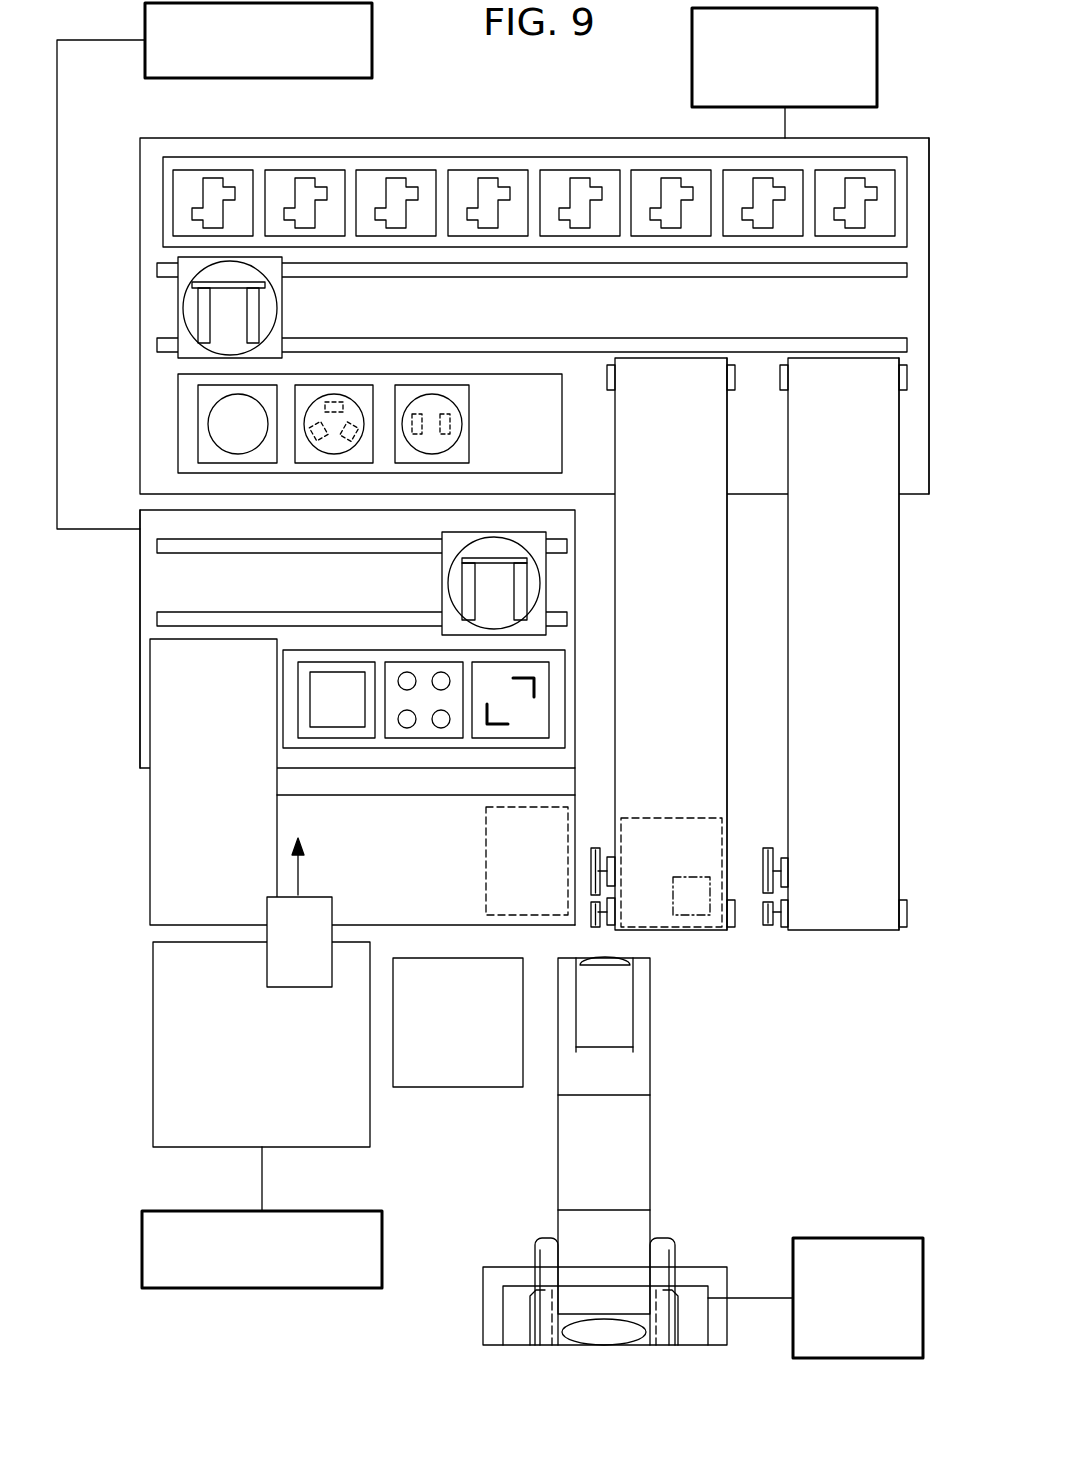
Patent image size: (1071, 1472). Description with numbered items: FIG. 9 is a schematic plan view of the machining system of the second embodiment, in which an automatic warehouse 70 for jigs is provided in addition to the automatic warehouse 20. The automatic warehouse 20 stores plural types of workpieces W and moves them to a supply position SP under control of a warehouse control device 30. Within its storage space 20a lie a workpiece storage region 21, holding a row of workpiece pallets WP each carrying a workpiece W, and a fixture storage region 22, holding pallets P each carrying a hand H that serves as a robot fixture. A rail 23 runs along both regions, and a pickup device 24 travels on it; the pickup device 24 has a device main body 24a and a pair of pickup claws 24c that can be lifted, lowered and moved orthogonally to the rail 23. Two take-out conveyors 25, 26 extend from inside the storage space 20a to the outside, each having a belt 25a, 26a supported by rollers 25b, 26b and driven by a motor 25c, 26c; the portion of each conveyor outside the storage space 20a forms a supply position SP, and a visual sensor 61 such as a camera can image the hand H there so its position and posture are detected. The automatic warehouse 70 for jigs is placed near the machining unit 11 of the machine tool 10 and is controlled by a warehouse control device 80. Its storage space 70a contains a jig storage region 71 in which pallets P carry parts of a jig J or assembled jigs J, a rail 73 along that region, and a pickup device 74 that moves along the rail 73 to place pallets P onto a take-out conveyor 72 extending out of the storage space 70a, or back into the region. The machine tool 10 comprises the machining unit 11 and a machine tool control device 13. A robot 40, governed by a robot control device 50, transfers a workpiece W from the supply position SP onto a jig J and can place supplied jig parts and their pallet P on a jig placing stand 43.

The warehouse control device 80 is at (372, 37).
The warehouse control device 30 is at (692, 62).
The automatic warehouse 20 is at (904, 112).
The storage space 20a is at (929, 470).
The workpiece storage region 21 is at (535, 582).
The workpiece W is at (206, 178).
The workpiece pallet WP is at (236, 170).
The rail 23 is at (807, 337).
The pickup device 24 is at (214, 314).
The device main body 24a is at (178, 283).
The pickup claws 24c is at (196, 313).
The fixture storage region 22 is at (388, 628).
The pallet P is at (198, 425).
The hand H is at (218, 402).
The take-out conveyor 25 is at (642, 653).
The belt 25a is at (727, 687).
The roller 25b is at (607, 375).
The motor 25c is at (612, 857).
The take-out conveyor 26 is at (830, 699).
The belt 26a is at (899, 862).
The roller 26b is at (780, 378).
The motor 26c is at (785, 860).
The supply position SP is at (486, 865).
The visual sensor 61 is at (680, 930).
The automatic warehouse for jigs 70 is at (365, 717).
The storage space 70a is at (140, 662).
The jig storage region 71 is at (565, 685).
The take-out conveyor 72 is at (150, 825).
The rail 73 is at (157, 546).
The pickup device 74 is at (442, 583).
The machine tool 10 is at (273, 1024).
The machining unit 11 is at (372, 1130).
The jig J is at (318, 990).
The machine tool control device 13 is at (255, 1290).
The robot 40 is at (545, 1185).
The jig placing stand 43 is at (490, 1088).
The robot control device 50 is at (850, 1238).